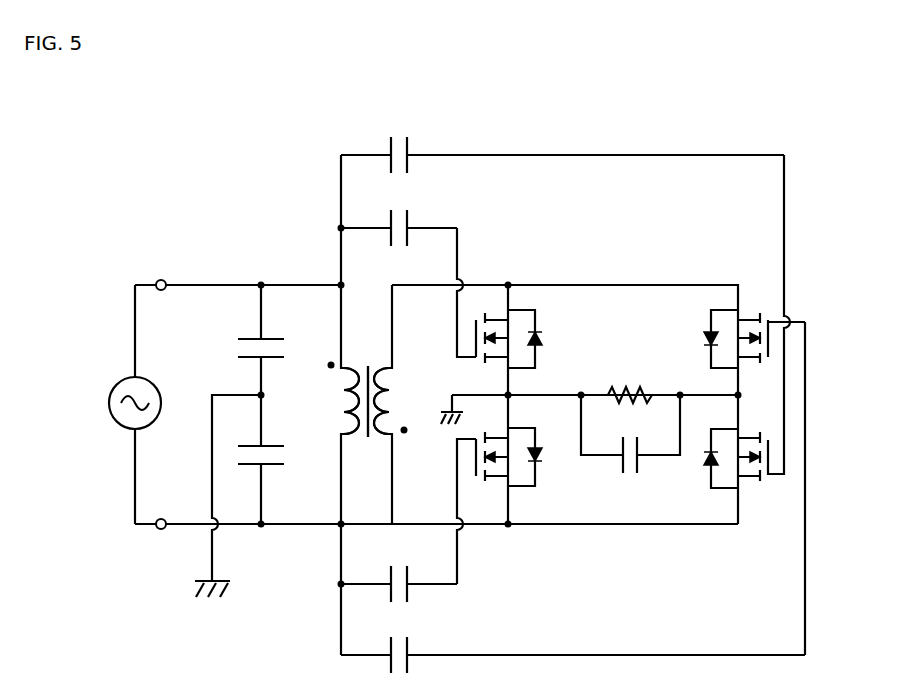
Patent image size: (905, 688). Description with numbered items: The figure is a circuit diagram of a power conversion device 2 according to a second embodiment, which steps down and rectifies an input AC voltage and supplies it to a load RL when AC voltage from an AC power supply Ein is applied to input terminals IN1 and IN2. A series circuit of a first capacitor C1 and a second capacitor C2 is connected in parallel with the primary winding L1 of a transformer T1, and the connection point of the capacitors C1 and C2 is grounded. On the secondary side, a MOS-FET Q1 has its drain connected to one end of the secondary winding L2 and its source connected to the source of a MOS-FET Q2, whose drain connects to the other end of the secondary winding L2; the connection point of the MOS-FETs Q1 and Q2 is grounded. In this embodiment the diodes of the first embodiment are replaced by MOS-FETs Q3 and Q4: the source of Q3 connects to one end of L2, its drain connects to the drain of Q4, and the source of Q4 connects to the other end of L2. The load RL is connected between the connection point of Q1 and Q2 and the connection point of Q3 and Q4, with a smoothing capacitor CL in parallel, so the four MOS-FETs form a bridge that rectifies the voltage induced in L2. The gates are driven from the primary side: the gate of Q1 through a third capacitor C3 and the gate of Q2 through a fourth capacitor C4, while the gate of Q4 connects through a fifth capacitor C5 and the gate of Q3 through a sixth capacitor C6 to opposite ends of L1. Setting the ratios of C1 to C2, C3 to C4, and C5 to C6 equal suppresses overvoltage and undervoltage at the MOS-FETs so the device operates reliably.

The power conversion device 2 is at (254, 126).
The input terminal IN1 is at (159, 275).
The input terminal IN2 is at (159, 514).
The AC power supply Ein is at (132, 394).
The first capacitor C1 is at (268, 340).
The second capacitor C2 is at (268, 459).
The third capacitor C3 is at (399, 224).
The fourth capacitor C4 is at (399, 588).
The fifth capacitor C5 is at (562, 151).
The sixth capacitor C6 is at (573, 659).
The transformer T1 is at (366, 385).
The primary winding L1 is at (335, 401).
The secondary winding L2 is at (397, 401).
The MOS-FET Q1 is at (507, 347).
The MOS-FET Q2 is at (507, 465).
The MOS-FET Q3 is at (736, 347).
The MOS-FET Q4 is at (736, 466).
The load RL is at (630, 383).
The smoothing capacitor CL is at (630, 446).